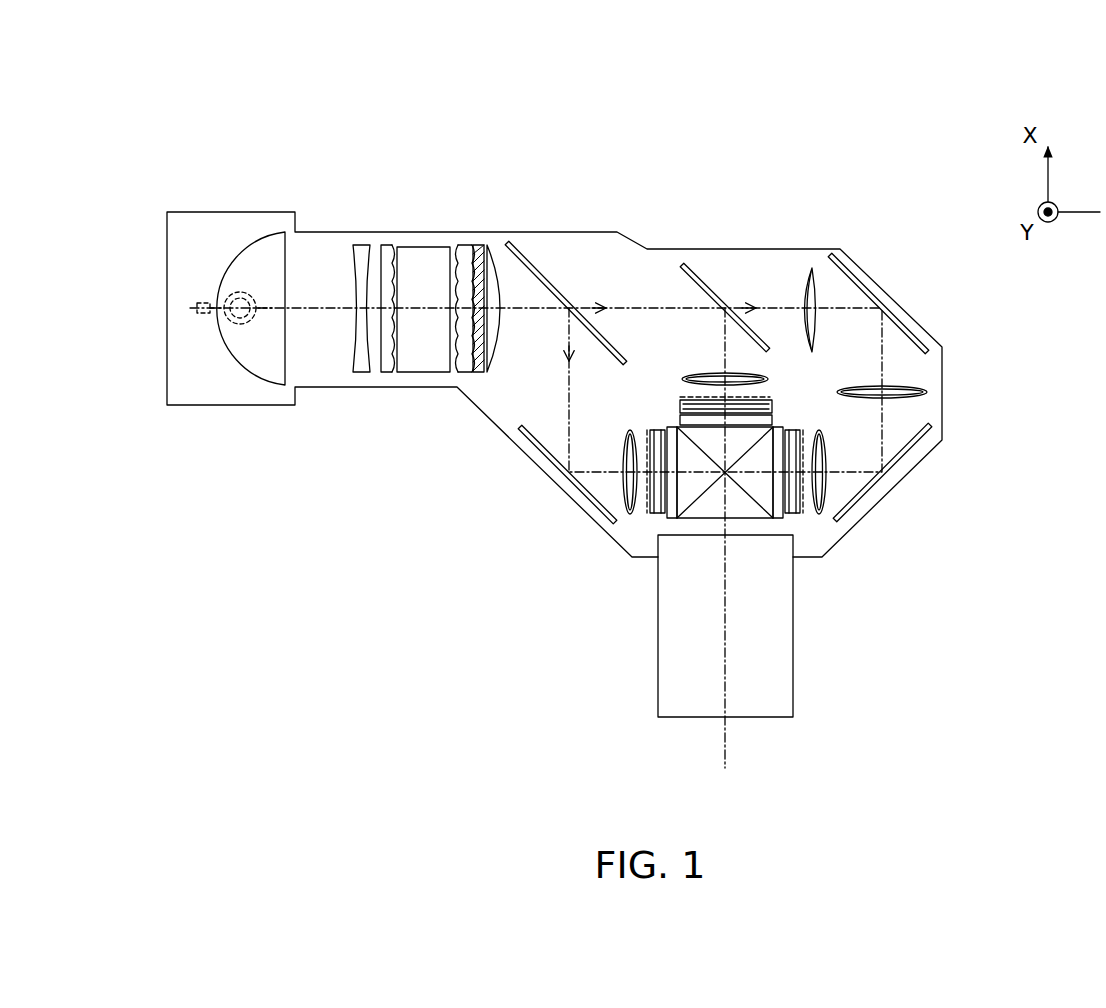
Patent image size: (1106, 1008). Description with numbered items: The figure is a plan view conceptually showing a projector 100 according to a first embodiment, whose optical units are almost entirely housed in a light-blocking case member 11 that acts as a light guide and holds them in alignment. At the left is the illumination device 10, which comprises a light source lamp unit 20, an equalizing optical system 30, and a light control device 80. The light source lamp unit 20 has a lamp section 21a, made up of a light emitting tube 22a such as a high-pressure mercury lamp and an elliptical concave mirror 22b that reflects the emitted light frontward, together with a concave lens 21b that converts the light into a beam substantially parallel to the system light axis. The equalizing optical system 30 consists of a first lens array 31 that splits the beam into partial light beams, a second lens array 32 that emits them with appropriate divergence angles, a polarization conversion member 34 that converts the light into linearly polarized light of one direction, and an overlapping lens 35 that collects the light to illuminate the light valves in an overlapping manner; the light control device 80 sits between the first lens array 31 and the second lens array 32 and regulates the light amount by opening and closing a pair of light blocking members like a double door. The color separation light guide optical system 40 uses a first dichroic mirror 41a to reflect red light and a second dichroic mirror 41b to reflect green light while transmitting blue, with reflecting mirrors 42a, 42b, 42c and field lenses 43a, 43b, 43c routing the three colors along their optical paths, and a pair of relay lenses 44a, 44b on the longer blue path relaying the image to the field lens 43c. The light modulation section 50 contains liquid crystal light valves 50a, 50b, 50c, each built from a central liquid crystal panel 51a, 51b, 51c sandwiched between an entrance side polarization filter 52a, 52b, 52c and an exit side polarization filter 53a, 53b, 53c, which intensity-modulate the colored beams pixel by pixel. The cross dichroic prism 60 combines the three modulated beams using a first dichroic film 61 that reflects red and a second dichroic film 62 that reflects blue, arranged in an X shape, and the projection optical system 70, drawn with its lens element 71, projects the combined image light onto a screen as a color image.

The projector 100 is at (1034, 93).
The illumination device 10 is at (370, 185).
The light source lamp unit 20 is at (238, 387).
The lamp section 21a is at (287, 266).
The concave lens 21b is at (360, 375).
The light emitting tube 22a is at (238, 320).
The concave mirror 22b is at (258, 250).
The equalizing optical system 30 is at (440, 414).
The first lens array 31 is at (383, 250).
The second lens array 32 is at (465, 248).
The polarization conversion member 34 is at (481, 375).
The overlapping lens 35 is at (492, 250).
The light control device 80 is at (420, 375).
The color separation light guide optical system 40 is at (636, 228).
The first dichroic mirror 41a is at (535, 270).
The second dichroic mirror 41b is at (691, 272).
The reflecting mirror 42a is at (558, 466).
The reflecting mirror 42b is at (935, 326).
The reflecting mirror 42c is at (903, 456).
The case member 11 is at (912, 297).
The field lens 43a is at (623, 482).
The field lens 43b is at (770, 380).
The field lens 43c is at (828, 492).
The relay lens 44a is at (814, 273).
The relay lens 44b is at (927, 392).
The light modulation section 50 is at (670, 530).
The liquid crystal light valve 50a is at (566, 534).
The liquid crystal light valve 50b is at (724, 419).
The liquid crystal light valve 50c is at (864, 530).
The liquid crystal panel 51a is at (648, 521).
The liquid crystal panel 51b is at (680, 400).
The liquid crystal panel 51c is at (787, 521).
The entrance side polarization filter 52a is at (656, 521).
The entrance side polarization filter 52b is at (772, 405).
The entrance side polarization filter 52c is at (800, 521).
The exit side polarization filter 53a is at (669, 521).
The exit side polarization filter 53b is at (773, 420).
The exit side polarization filter 53c is at (778, 521).
The cross dichroic prism 60 is at (752, 547).
The first dichroic film 61 is at (740, 493).
The second dichroic film 62 is at (712, 492).
The projection optical system 70 is at (727, 675).
The projection lens 71 is at (778, 700).